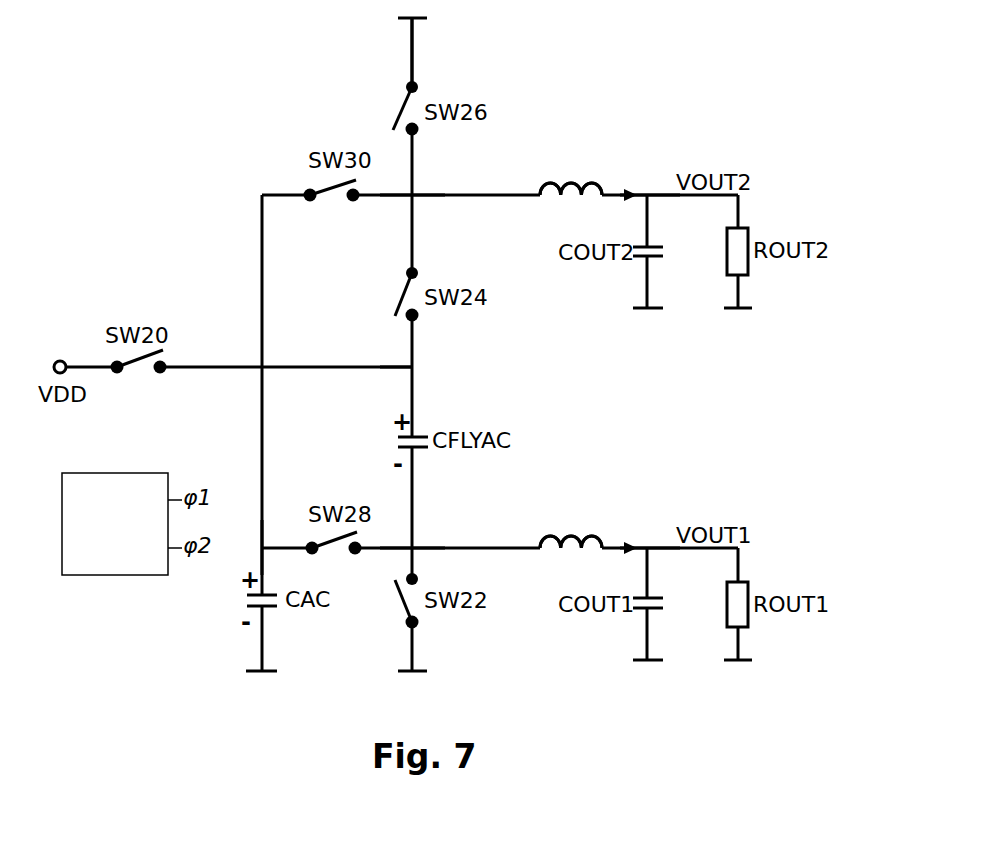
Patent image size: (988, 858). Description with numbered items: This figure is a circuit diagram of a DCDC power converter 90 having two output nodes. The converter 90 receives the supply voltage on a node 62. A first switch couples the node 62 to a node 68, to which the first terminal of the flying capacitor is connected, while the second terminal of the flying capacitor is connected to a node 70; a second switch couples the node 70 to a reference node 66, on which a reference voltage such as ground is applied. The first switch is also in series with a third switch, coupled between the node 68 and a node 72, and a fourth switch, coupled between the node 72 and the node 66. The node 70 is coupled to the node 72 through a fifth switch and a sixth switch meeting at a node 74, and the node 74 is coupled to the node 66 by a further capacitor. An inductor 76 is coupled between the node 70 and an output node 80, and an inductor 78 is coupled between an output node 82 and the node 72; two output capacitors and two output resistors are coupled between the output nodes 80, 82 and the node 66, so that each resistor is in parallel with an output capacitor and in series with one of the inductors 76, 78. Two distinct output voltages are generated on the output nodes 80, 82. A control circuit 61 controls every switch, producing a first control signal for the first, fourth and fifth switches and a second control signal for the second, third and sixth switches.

The power converter 90 is at (648, 70).
The control circuit 61 is at (113, 473).
The node 62 is at (60, 361).
The node 68 is at (413, 365).
The node 70 is at (414, 546).
The node 72 is at (414, 193).
The node 74 is at (262, 547).
The inductor 76 is at (576, 536).
The inductor 78 is at (576, 183).
The output node 80 is at (647, 546).
The output node 82 is at (647, 193).
The reference node 66 is at (743, 311).